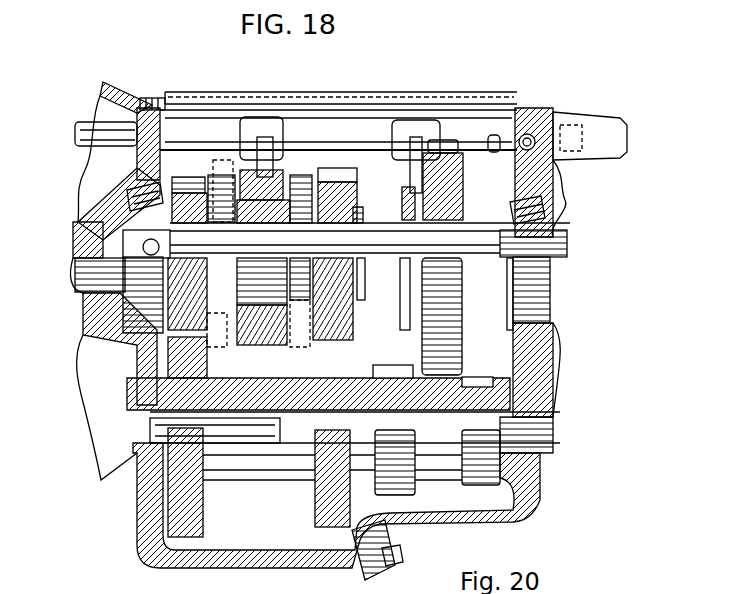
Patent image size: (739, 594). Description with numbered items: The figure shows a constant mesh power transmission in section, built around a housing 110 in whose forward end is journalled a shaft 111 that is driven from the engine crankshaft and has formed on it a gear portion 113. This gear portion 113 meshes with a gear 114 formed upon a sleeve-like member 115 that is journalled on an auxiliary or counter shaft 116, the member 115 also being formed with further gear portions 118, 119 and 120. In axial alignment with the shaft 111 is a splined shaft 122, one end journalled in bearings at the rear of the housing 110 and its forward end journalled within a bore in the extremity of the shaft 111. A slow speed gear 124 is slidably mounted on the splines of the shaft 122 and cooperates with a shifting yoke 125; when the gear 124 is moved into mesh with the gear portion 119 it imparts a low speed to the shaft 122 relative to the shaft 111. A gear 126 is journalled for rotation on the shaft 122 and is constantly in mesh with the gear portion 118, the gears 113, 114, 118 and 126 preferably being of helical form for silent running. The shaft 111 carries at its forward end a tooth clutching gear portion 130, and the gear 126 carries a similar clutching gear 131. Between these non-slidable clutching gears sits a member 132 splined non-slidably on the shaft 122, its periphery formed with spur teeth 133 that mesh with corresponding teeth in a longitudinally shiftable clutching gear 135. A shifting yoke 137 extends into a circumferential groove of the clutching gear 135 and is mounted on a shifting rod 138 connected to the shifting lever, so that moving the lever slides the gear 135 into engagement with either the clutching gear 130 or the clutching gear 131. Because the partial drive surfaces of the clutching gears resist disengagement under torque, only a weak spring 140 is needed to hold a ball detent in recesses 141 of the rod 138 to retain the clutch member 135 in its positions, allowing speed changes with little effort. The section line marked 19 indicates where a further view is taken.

The housing 110 is at (140, 518).
The shaft 111 is at (92, 273).
The gear portion 113 is at (183, 180).
The gear 114 is at (183, 470).
The sleeve-like member 115 is at (257, 467).
The auxiliary or counter shaft 116 is at (155, 420).
The gear portion 118 is at (342, 537).
The gear portion 119 is at (398, 470).
The gear portion 120 is at (480, 470).
The splined shaft 122 is at (540, 192).
The slow speed gear 124 is at (460, 345).
The shifting yoke 125 is at (400, 123).
The gear 126 is at (335, 183).
The tooth clutching gear portion 130 is at (217, 205).
The clutching gear 131 is at (303, 172).
The member 132 is at (248, 175).
The spur teeth 133 is at (272, 353).
The shiftable clutching gear 135 is at (312, 330).
The shifting yoke 137 is at (280, 180).
The shifting rod 138 is at (80, 148).
The weak spring 140 is at (533, 138).
The recesses 141 is at (505, 105).
The section line 19- 19 is at (231, 166).